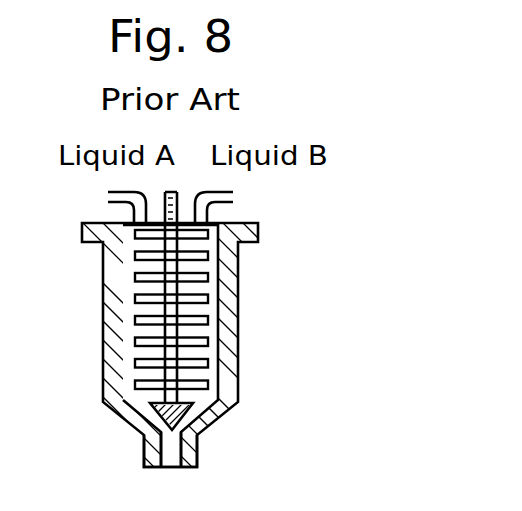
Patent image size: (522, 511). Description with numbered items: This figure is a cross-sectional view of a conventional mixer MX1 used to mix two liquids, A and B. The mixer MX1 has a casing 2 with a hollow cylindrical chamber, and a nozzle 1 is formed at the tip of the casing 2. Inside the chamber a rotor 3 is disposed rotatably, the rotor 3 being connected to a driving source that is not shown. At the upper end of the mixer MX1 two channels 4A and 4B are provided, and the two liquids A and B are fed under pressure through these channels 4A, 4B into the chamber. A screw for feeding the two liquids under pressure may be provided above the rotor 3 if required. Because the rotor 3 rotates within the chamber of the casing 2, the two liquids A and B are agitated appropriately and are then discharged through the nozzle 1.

The nozzle 1 is at (198, 451).
The casing 2 is at (238, 318).
The rotor 3 is at (212, 274).
The channel 4A is at (108, 193).
The channel 4B is at (232, 200).
The mixer MX1 is at (320, 219).